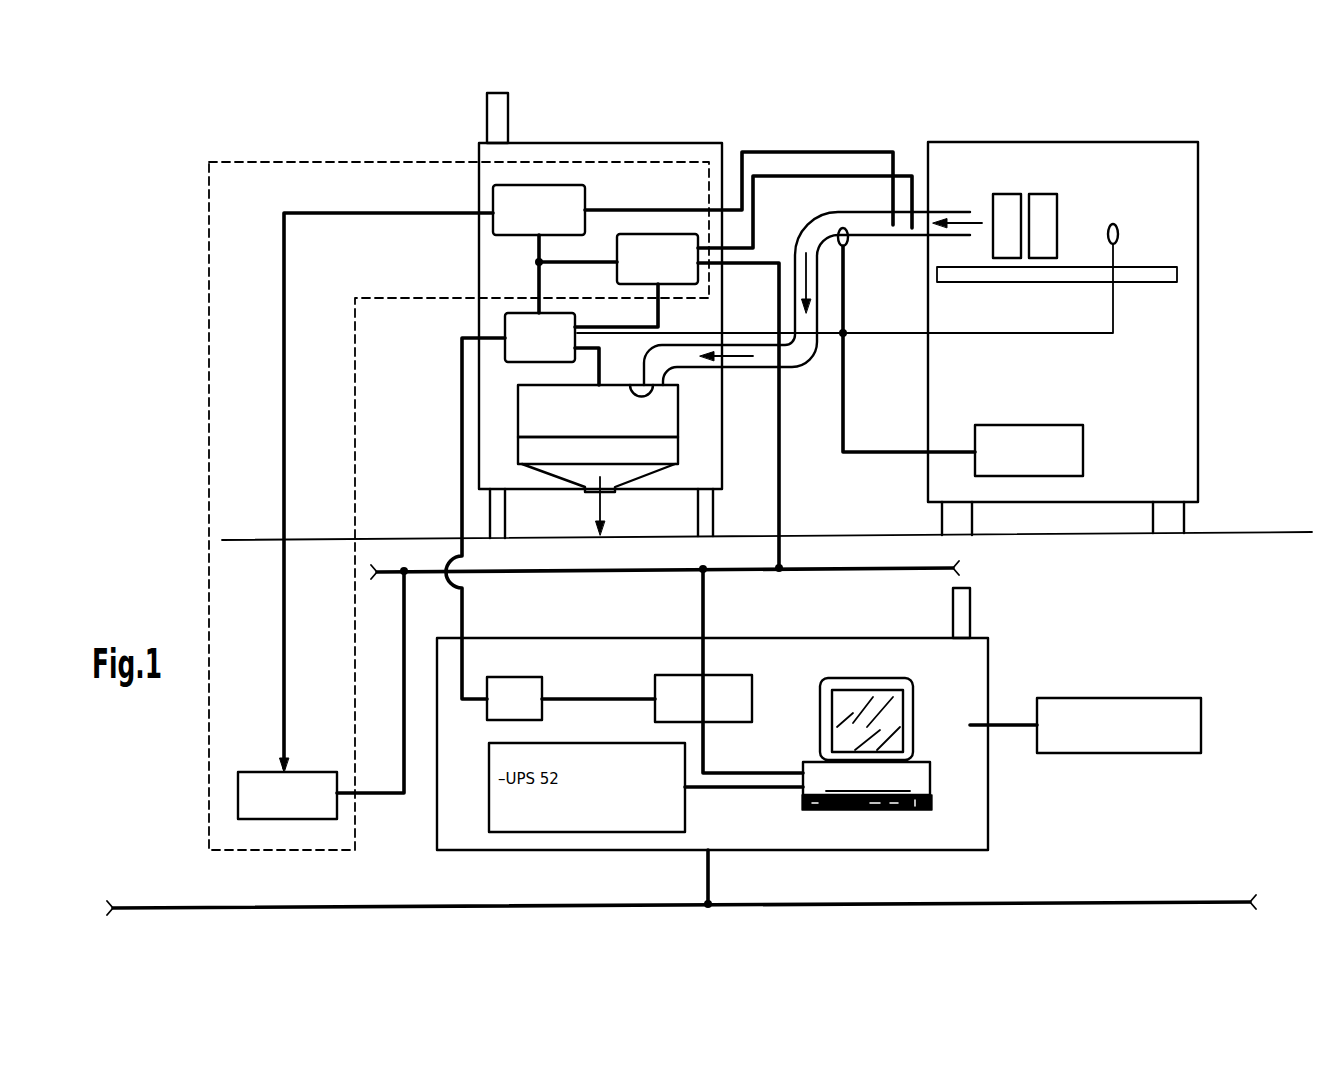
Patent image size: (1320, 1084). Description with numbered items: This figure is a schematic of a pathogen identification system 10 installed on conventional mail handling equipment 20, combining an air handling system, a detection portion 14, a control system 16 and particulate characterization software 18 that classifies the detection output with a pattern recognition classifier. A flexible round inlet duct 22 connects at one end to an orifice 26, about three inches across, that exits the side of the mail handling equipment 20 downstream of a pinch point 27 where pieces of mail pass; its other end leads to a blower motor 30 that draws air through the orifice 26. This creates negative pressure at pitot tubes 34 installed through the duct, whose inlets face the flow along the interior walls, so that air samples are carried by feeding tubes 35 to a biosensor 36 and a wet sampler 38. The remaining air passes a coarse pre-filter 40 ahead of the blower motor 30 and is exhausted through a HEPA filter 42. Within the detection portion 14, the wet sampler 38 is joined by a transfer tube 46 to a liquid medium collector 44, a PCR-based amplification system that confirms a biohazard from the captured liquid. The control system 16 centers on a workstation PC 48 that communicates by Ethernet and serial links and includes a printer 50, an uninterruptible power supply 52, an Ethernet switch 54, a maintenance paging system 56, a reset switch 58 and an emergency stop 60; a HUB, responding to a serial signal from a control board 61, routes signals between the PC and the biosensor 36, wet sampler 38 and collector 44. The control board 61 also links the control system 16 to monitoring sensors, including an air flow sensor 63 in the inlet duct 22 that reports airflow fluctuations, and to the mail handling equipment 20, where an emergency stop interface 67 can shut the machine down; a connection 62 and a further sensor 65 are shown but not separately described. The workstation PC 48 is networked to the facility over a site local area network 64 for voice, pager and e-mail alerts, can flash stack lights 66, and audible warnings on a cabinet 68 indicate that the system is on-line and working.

The pathogen identification system 10 is at (283, 128).
The detection portion 14 is at (209, 282).
The control system 16 is at (990, 660).
The particulate characterization software 18 is at (867, 786).
The mail handling equipment 20 is at (1205, 393).
The inlet duct 22 is at (834, 212).
The orifice 26 is at (918, 213).
The pinch point 27 is at (1078, 190).
The blower motor 30 is at (655, 410).
The pitot tubes 34 is at (902, 160).
The feeding tubes 35 is at (831, 152).
The biosensor 36 is at (677, 242).
The wet sampler 38 is at (493, 197).
The coarse pre-filter 40 is at (634, 386).
The HEPA filter 42 is at (672, 450).
The liquid medium collector 44 is at (254, 785).
The transfer tube 46 is at (380, 213).
The workstation PC 48 is at (890, 692).
The printer 50 is at (554, 759).
The uninterruptible power supply 52 is at (514, 678).
The Ethernet switch 54 is at (754, 708).
The maintenance paging system 56 is at (1115, 753).
The reset switch 58 is at (585, 818).
The emergency stop 60 is at (555, 799).
The control board 61 is at (508, 326).
The ethernet bus 62 is at (826, 568).
The air flow sensor 63 is at (860, 250).
The site local area network 64 is at (438, 895).
The chamber sensor 65 is at (1150, 228).
The stack lights 66 is at (502, 113).
The emergency stop interface 67 is at (1040, 427).
The cabinet 68 is at (640, 138).